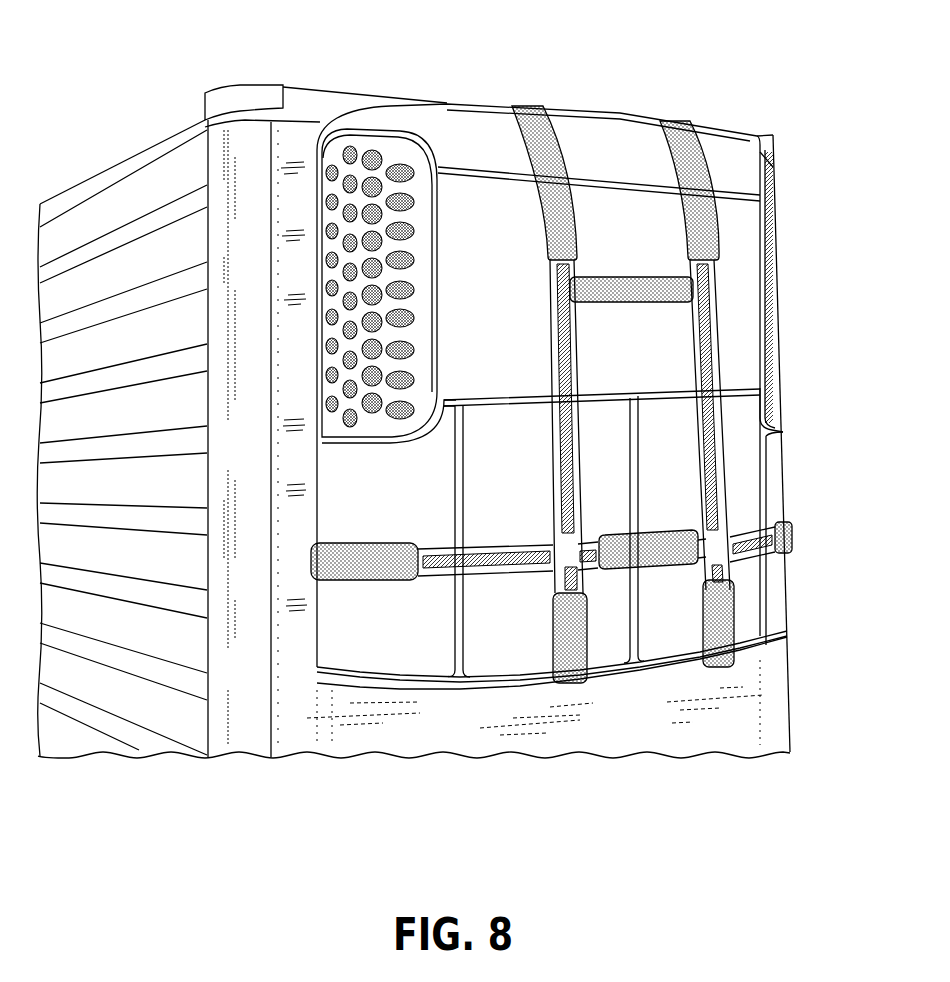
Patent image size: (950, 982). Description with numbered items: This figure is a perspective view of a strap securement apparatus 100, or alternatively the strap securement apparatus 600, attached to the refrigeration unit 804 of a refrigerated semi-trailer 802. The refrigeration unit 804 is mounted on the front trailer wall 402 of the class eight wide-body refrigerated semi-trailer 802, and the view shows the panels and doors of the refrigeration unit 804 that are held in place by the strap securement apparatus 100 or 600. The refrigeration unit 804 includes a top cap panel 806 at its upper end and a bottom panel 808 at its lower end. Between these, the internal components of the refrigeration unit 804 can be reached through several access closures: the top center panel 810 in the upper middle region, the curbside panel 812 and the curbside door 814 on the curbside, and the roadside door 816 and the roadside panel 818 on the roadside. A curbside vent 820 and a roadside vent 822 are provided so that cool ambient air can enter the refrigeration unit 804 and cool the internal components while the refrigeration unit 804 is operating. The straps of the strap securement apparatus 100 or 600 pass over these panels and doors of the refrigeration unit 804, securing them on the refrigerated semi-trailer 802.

The strap securement apparatus 100 is at (530, 88).
The front trailer wall 402 is at (288, 148).
The strap securement apparatus 600 is at (679, 100).
The refrigerated semi-trailer 802 is at (185, 68).
The refrigeration unit 804 is at (434, 716).
The top cap panel 806 is at (629, 160).
The bottom panel 808 is at (662, 660).
The top center panel 810 is at (645, 350).
The curbside panel 812 is at (400, 503).
The curbside door 814 is at (523, 490).
The roadside door 816 is at (687, 483).
The roadside panel 818 is at (777, 500).
The curbside vent 820 is at (388, 157).
The roadside vent 822 is at (770, 243).